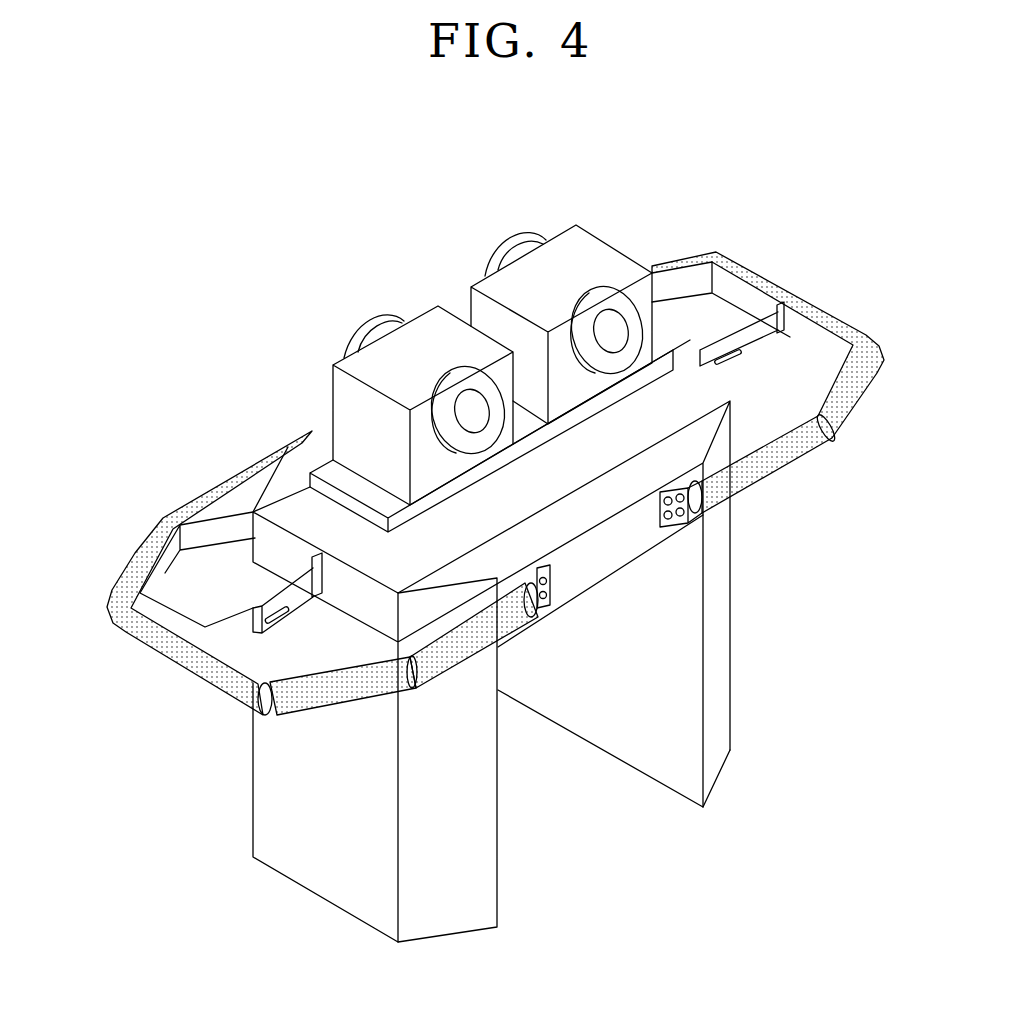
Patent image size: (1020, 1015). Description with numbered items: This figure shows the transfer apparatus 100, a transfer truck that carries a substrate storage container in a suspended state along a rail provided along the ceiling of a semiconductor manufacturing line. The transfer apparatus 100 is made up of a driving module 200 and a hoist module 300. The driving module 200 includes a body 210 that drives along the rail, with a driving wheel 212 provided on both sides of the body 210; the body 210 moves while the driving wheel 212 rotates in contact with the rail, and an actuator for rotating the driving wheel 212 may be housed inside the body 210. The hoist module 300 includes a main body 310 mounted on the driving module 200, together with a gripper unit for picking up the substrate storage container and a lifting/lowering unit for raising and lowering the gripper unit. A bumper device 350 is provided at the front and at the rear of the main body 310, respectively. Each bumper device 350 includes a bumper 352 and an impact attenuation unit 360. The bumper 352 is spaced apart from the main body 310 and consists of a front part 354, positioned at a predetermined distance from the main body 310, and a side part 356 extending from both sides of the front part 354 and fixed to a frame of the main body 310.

The transfer apparatus 100 is at (636, 158).
The driving module 200 is at (487, 353).
The body 210 is at (428, 325).
The driving wheel 212 is at (517, 252).
The hoist module 300 is at (545, 671).
The main body 310 is at (487, 845).
The bumper device 350 is at (473, 525).
The bumper 352 is at (305, 691).
The front part 354 is at (207, 681).
The side part 356 is at (452, 655).
The impact attenuation unit 360 is at (254, 582).